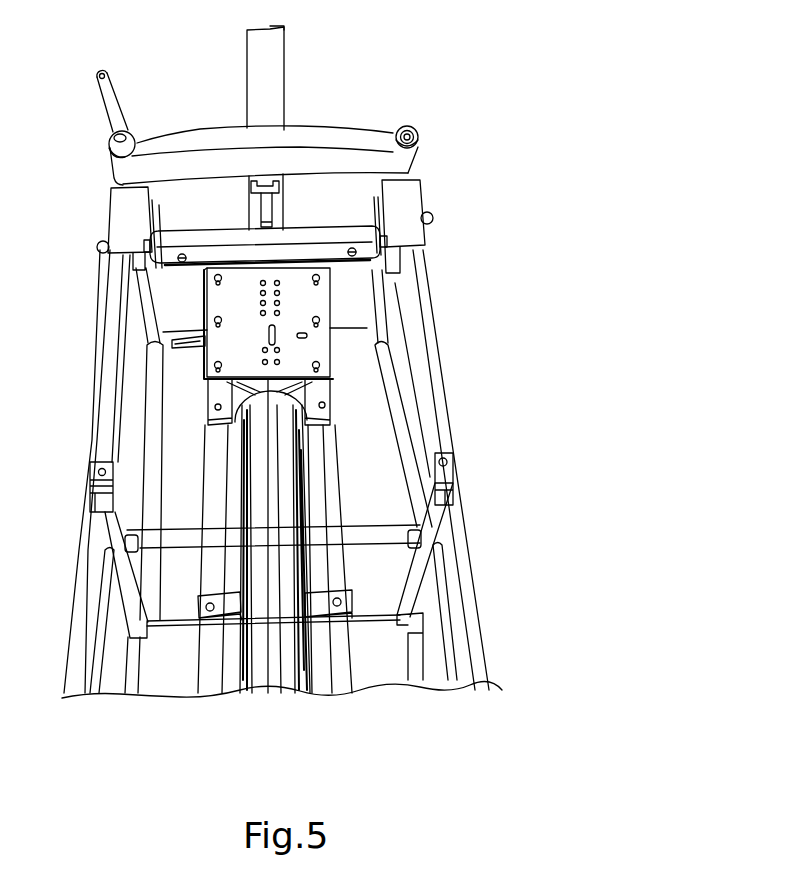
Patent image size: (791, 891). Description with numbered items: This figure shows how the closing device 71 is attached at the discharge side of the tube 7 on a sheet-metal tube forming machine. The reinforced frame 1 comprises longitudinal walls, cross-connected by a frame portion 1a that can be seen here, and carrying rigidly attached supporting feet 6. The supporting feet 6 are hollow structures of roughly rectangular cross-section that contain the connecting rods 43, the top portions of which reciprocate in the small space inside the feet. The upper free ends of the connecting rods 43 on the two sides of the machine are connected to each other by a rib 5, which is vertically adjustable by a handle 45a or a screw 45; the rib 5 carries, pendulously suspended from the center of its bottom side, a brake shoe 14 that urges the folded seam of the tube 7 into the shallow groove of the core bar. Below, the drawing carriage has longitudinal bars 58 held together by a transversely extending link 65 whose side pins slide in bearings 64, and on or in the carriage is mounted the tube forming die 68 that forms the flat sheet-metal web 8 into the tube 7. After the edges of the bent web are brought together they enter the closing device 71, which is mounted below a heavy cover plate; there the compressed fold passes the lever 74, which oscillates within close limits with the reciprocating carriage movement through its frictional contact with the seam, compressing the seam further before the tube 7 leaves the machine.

The reinforced frame 1 is at (440, 658).
The frame portion 1a is at (385, 573).
The rib 5 is at (362, 140).
The supporting foot 6 is at (427, 483).
The tube 7 is at (275, 43).
The sheet-metal web 8 is at (278, 665).
The brake shoe 14 is at (263, 187).
The connecting rod 43 is at (123, 185).
The screw 45 is at (418, 130).
The handle 45a is at (97, 78).
The longitudinal bar 58 is at (345, 663).
The bearing 64 is at (125, 220).
The transversely extending link 65 is at (207, 256).
The tube forming die 68 is at (262, 665).
The closing device 71 is at (305, 302).
The lever 74 is at (197, 339).